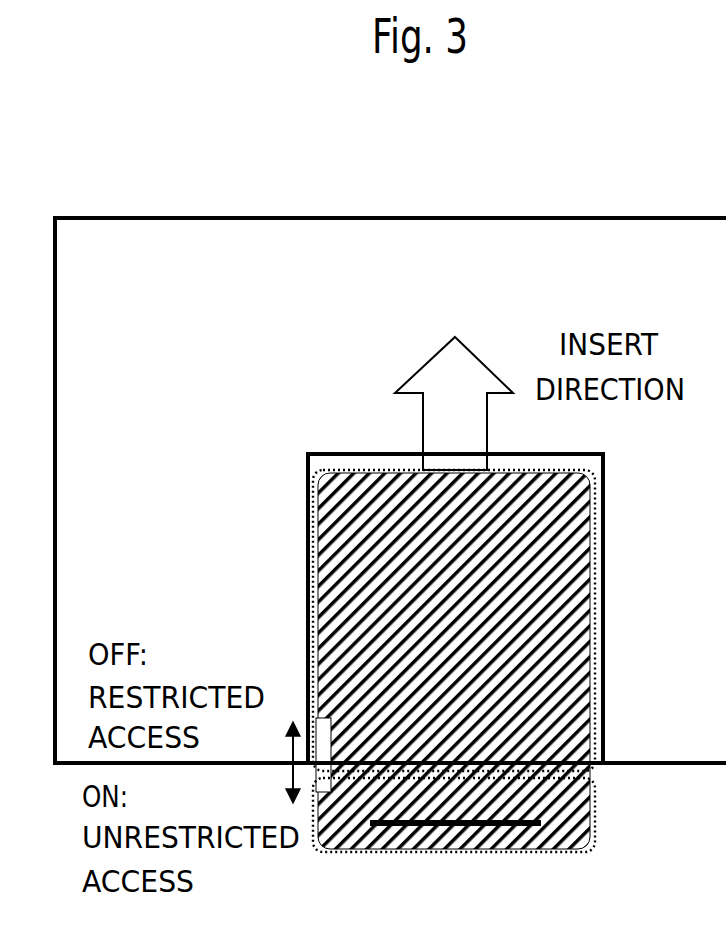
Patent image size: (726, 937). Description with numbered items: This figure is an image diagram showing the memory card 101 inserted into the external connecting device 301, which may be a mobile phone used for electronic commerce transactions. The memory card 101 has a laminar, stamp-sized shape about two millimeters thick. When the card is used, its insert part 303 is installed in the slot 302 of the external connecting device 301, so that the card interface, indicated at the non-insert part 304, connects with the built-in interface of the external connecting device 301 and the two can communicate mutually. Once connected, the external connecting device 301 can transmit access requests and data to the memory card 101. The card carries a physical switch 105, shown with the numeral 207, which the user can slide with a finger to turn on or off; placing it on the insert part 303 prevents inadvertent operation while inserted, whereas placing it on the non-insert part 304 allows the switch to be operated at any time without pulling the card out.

The external connecting device 301 is at (217, 218).
The slot 302 is at (350, 453).
The insert part 303 is at (598, 488).
The non-insert part 304 is at (597, 820).
The memory card 101 is at (353, 588).
The physical switch 105 is at (442, 813).
The switch 207 is at (323, 733).